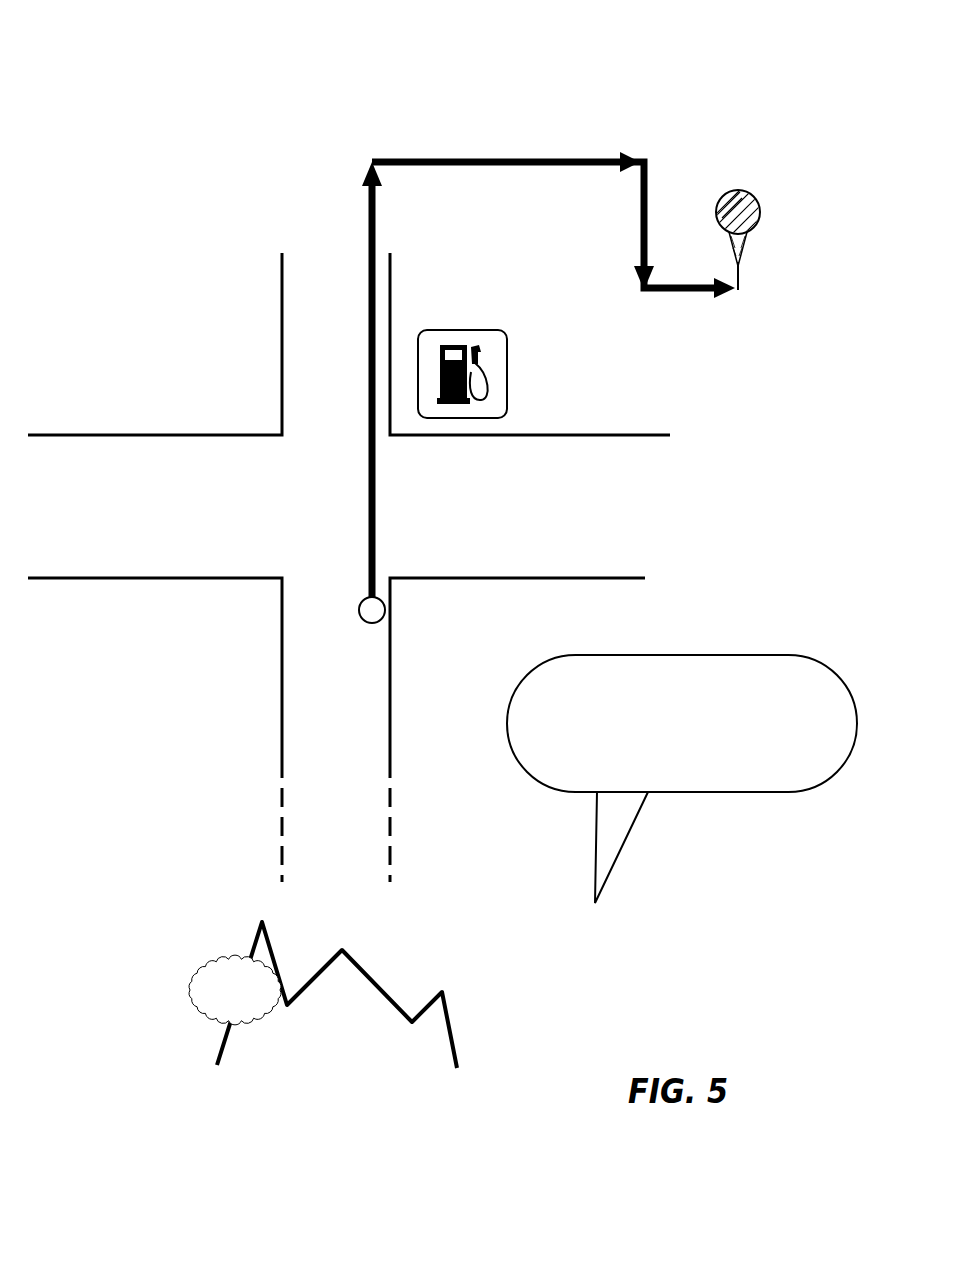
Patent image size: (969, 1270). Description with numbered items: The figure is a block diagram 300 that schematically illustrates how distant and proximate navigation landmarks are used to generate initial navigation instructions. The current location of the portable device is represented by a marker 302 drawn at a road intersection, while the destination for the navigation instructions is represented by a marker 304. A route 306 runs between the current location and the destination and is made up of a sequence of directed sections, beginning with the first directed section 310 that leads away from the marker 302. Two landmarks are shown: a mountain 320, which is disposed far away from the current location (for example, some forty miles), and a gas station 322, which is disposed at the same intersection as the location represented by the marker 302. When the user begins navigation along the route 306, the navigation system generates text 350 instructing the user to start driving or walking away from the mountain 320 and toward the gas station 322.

The block diagram 300 is at (159, 46).
The marker 302 is at (360, 615).
The marker 304 is at (761, 212).
The route 306 is at (522, 160).
The first directed section 310 is at (372, 507).
The mountain 320 is at (449, 1028).
The gas station 322 is at (507, 400).
The text 350 is at (620, 846).